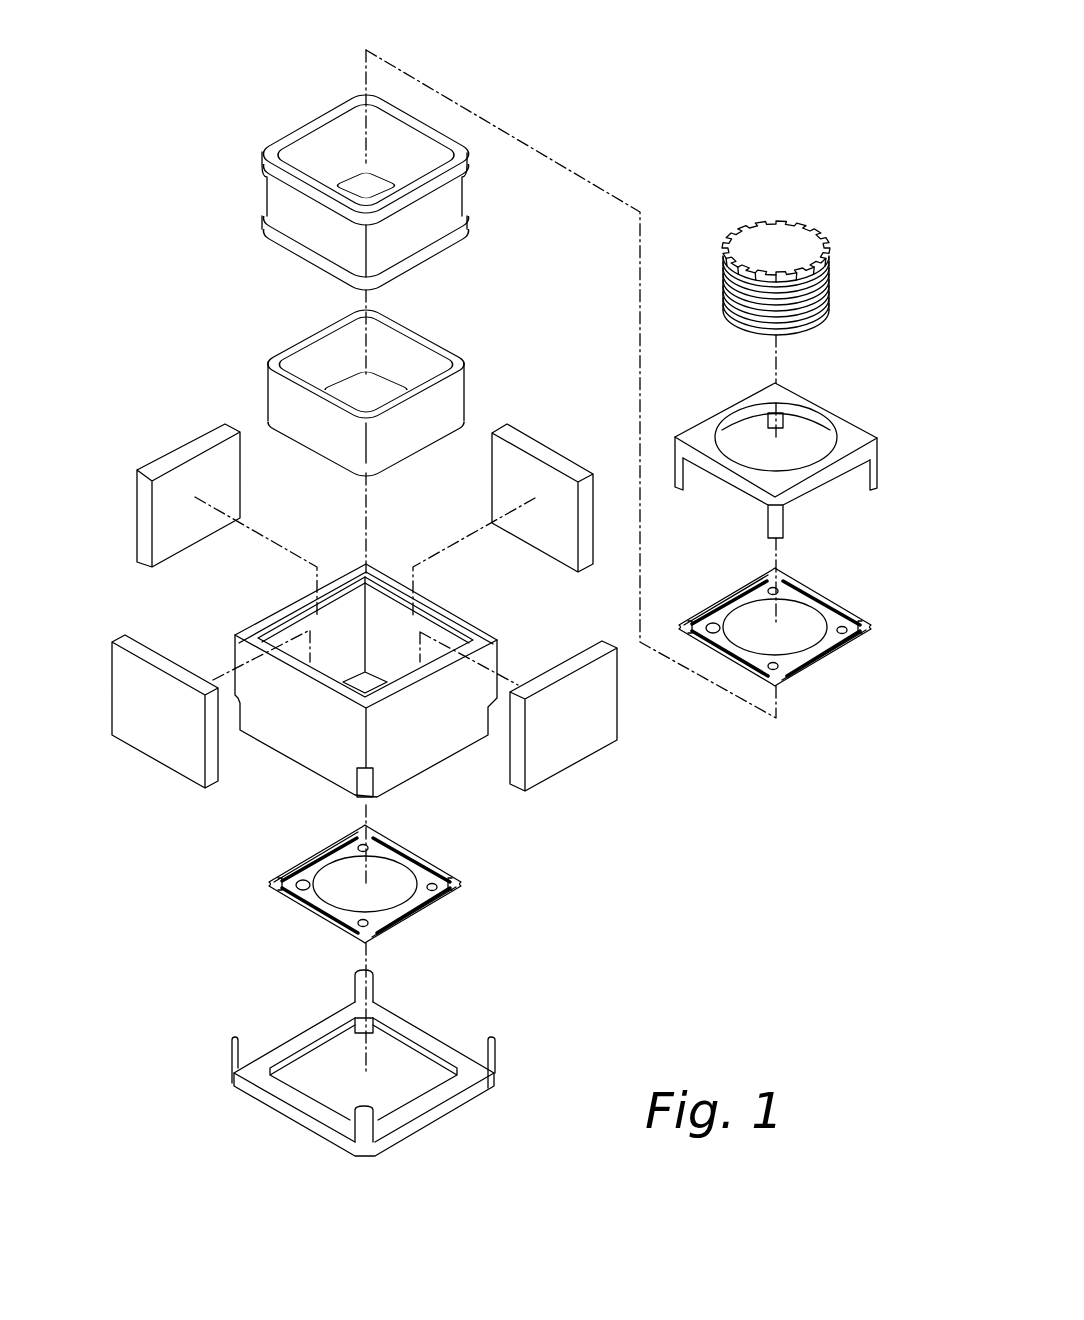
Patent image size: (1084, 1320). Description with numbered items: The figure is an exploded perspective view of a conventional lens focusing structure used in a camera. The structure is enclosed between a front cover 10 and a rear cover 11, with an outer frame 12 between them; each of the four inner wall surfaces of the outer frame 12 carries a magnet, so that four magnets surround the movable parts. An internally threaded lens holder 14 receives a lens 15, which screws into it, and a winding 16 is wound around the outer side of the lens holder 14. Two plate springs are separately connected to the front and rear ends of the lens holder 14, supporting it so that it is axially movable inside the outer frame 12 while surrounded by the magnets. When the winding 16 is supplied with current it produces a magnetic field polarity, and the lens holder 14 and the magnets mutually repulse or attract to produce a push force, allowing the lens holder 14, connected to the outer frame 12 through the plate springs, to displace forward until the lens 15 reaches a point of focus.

The front cover 10 is at (812, 403).
The rear cover 11 is at (425, 1102).
The outer frame 12 is at (435, 750).
The lens holder 14 is at (449, 207).
The lens 15 is at (822, 308).
The winding 16 is at (440, 348).